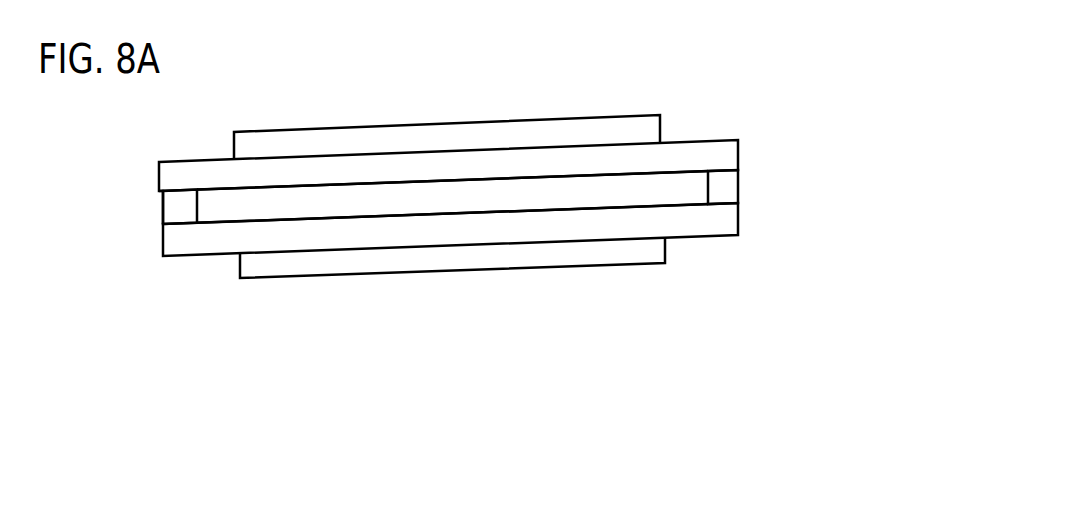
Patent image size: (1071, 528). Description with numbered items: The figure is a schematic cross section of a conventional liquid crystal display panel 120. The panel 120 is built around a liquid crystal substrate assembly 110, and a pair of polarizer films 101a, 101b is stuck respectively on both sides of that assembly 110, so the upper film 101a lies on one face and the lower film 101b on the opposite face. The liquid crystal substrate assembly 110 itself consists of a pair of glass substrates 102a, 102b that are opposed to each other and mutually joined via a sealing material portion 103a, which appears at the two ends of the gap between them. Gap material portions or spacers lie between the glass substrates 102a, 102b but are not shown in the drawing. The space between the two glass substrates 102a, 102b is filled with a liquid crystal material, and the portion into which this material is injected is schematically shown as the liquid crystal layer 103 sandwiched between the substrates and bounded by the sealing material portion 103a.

The liquid crystal display panel 120 is at (734, 62).
The liquid crystal substrate assembly 110 is at (148, 163).
The polarizer film 101a is at (413, 130).
The polarizer film 101b is at (405, 260).
The glass substrate 102a is at (730, 155).
The glass substrate 102b is at (730, 218).
The liquid crystal layer 103 is at (560, 195).
The sealing material portion 103a is at (183, 213).